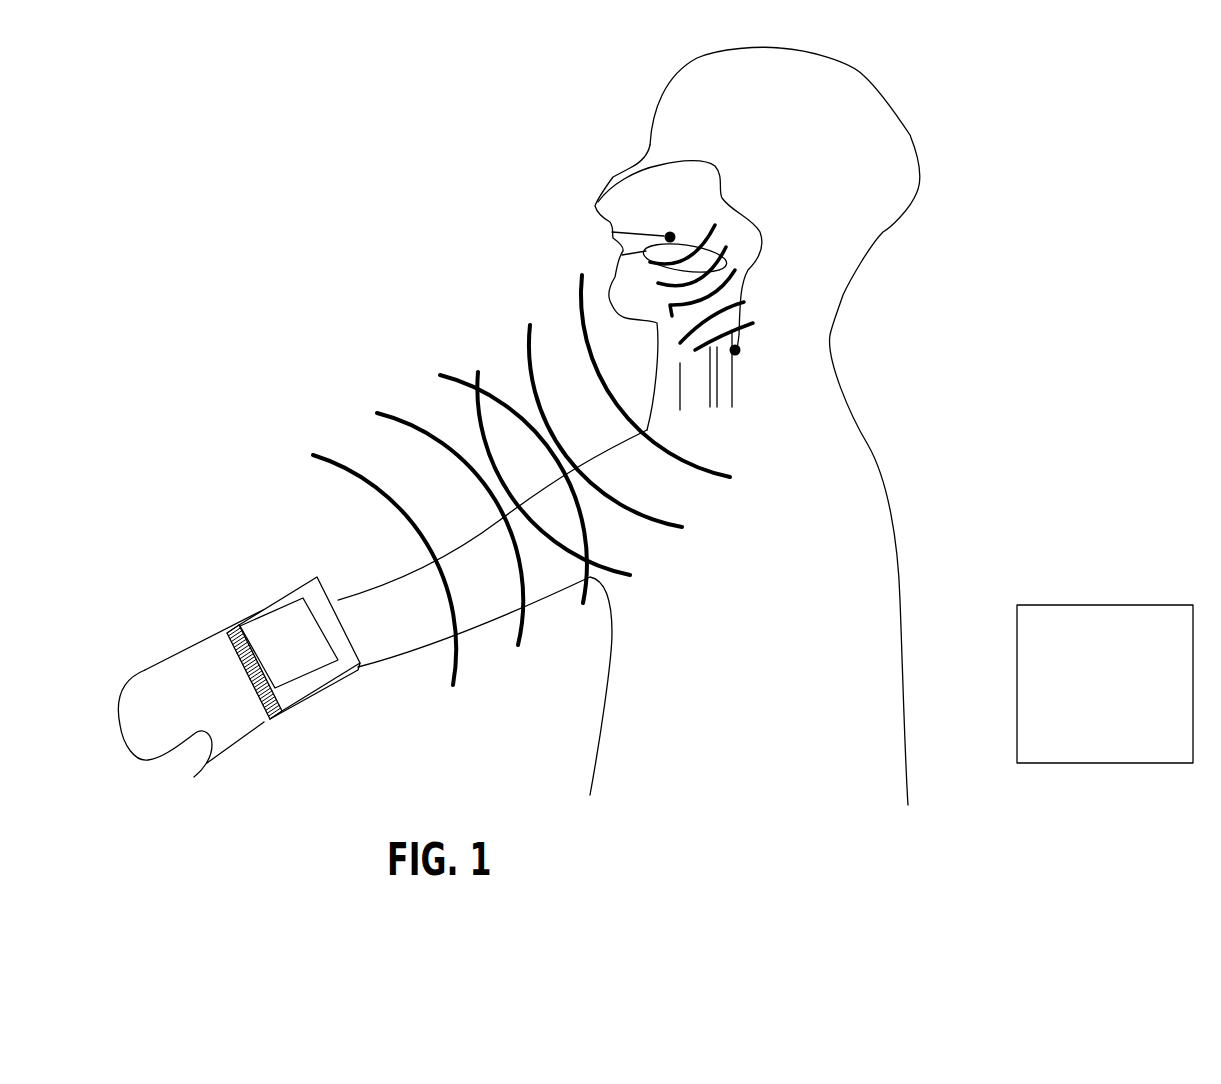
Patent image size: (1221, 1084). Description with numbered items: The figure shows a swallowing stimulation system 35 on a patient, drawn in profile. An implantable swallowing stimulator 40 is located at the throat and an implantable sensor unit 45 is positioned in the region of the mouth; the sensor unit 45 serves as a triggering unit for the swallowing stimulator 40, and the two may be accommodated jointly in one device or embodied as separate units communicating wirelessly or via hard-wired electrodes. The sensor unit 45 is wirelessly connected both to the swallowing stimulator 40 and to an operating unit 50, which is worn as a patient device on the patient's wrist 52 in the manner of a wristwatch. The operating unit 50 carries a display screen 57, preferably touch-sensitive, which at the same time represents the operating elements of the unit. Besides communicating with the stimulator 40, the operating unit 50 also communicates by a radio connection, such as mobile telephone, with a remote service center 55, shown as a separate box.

The swallowing stimulation system 35 is at (640, 426).
The implantable swallowing stimulator 40 is at (859, 321).
The implantable sensor unit 45 is at (624, 156).
The operating unit 50 is at (274, 592).
The patient's wrist 52 is at (155, 632).
The remote service center 55 is at (1105, 634).
The display screen 57 is at (289, 576).